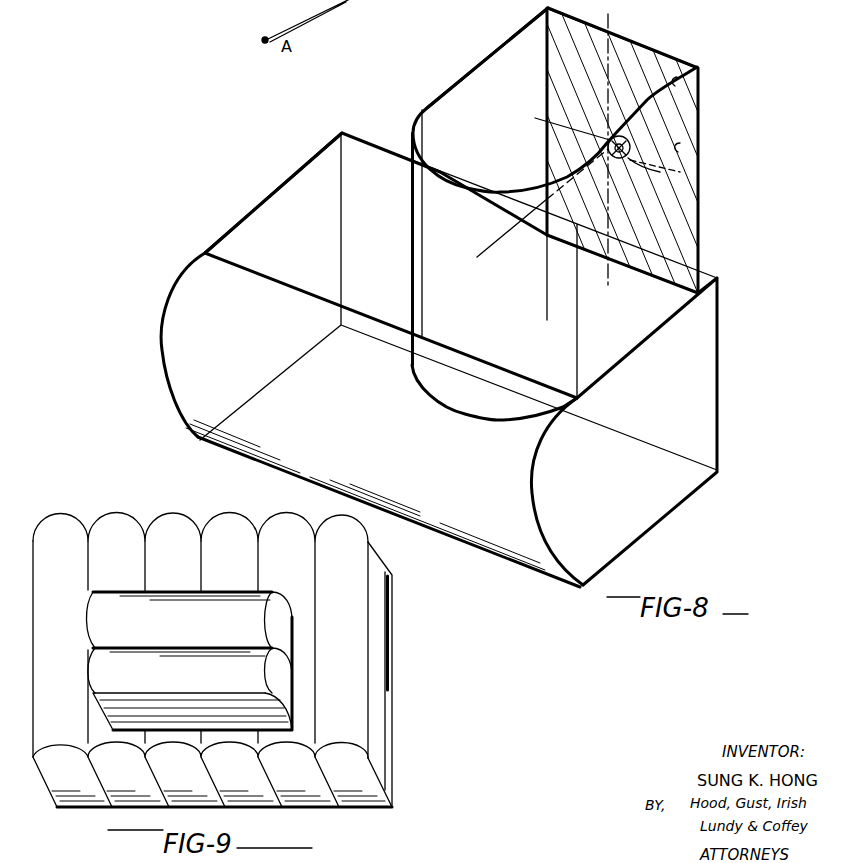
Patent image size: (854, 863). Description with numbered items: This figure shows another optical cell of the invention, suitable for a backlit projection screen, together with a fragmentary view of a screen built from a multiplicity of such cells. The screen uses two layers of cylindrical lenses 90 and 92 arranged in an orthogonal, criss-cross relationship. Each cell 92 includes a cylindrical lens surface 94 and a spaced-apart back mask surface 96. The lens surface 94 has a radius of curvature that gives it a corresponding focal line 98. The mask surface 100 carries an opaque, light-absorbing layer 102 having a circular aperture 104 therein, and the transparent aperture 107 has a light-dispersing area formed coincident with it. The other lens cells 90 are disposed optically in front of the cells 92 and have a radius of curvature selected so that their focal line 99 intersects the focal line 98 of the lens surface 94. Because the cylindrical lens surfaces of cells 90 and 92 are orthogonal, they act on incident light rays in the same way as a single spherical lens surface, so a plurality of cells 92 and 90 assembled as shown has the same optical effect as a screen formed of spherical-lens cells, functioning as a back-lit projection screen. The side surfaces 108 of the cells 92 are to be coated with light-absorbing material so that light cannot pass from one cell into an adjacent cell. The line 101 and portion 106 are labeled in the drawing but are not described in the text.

In FIG. 8, the cylindrical lens cell 90 is at (657, 488).
In FIG. 9, the cylindrical lens cell 90 is at (279, 627).
In FIG. 8, the cylindrical lens cell 92 is at (472, 90).
In FIG. 9, the cylindrical lens cell 92 is at (375, 613).
In FIG. 8, the cylindrical lens surface 94 is at (510, 400).
In FIG. 8, the back mask surface 96 is at (618, 58).
In FIG. 8, the focal line 98 is at (610, 26).
In FIG. 8, the focal line 99 is at (700, 185).
In FIG. 8, the mask surface 100 is at (680, 143).
In FIG. 8, the axis line 101 is at (509, 231).
In FIG. 8, the opaque light-absorbing layer 102 is at (677, 77).
In FIG. 8, the circular aperture 104 is at (630, 146).
In FIG. 8, the portion of plate 106 is at (628, 158).
In FIG. 8, the transparent aperture 107 is at (632, 147).
In FIG. 8, the side surfaces 108 is at (486, 64).